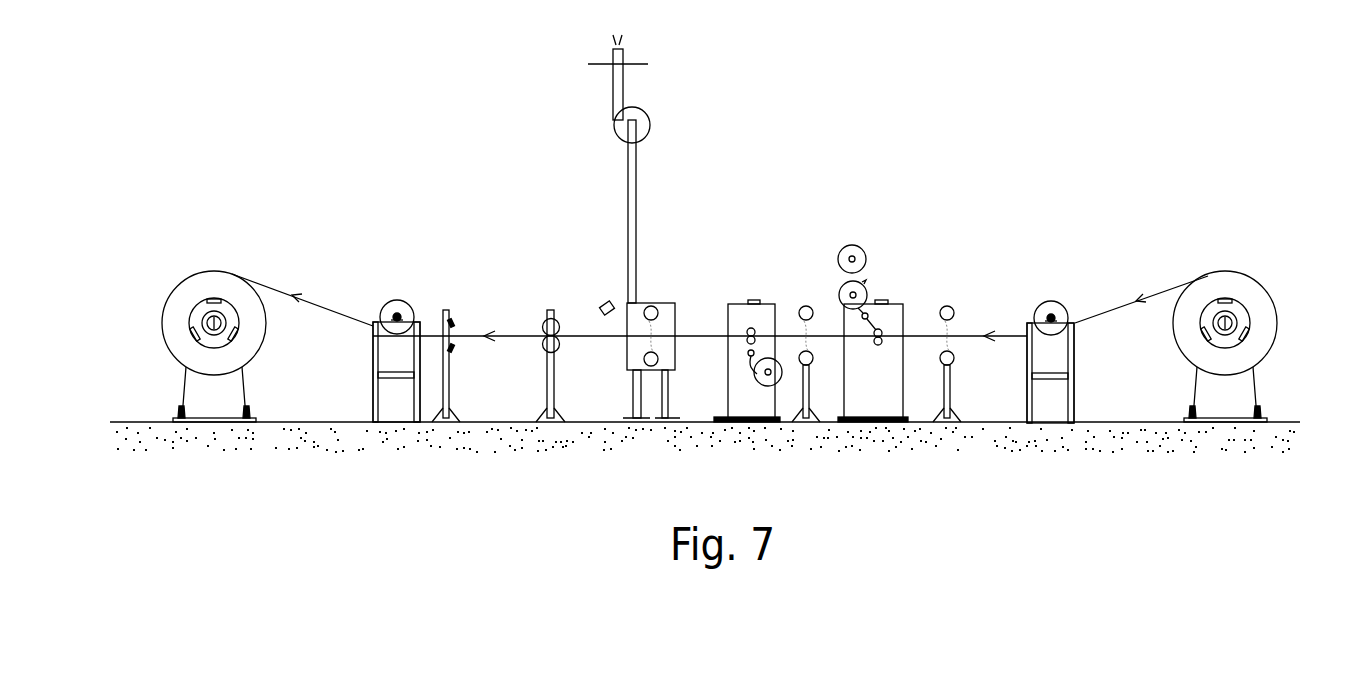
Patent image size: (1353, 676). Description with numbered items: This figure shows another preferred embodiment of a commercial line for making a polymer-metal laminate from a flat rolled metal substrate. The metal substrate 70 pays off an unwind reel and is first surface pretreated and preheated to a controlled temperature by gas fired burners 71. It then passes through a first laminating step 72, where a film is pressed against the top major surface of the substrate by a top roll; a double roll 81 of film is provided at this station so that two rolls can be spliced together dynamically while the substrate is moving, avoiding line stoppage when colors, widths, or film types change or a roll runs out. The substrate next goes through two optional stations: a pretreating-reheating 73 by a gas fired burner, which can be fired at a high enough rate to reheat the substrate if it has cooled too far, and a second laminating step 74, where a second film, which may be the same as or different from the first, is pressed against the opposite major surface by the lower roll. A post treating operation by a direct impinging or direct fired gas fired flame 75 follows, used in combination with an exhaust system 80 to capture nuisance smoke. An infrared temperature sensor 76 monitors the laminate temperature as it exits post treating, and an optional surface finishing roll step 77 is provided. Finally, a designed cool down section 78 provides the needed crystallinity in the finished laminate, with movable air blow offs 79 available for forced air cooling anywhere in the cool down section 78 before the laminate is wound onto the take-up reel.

The metal substrate 70 is at (1157, 285).
The gas fired burners 71 is at (948, 285).
The first laminating step 72 is at (880, 285).
The pretreating-reheating 73 is at (808, 285).
The second laminating step 74 is at (753, 285).
The direct fired gas fired flame 75 is at (658, 285).
The infrared temperature sensor 76 is at (609, 285).
The surface finishing roll step 77 is at (551, 285).
The cool down section 78 is at (494, 285).
The air blow off system 79 is at (450, 285).
The exhaust system 80 is at (613, 138).
The double roll of film 81 is at (851, 240).